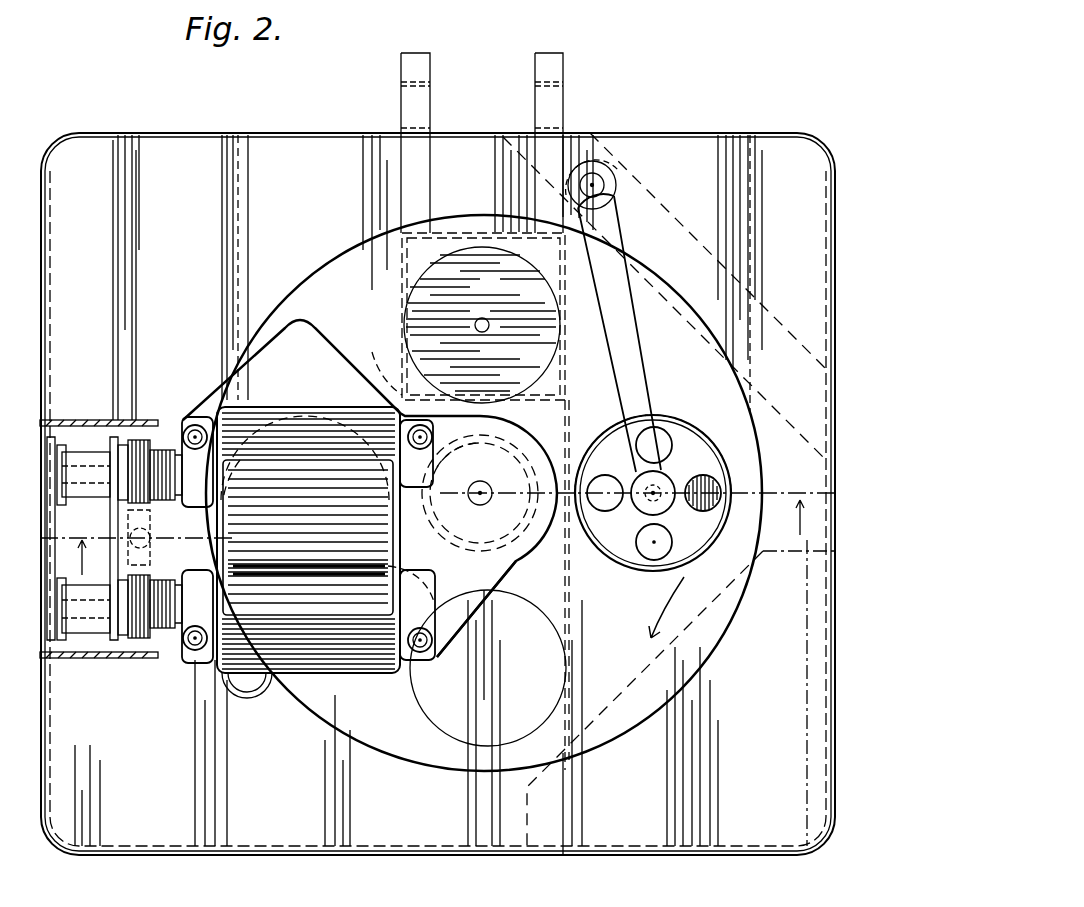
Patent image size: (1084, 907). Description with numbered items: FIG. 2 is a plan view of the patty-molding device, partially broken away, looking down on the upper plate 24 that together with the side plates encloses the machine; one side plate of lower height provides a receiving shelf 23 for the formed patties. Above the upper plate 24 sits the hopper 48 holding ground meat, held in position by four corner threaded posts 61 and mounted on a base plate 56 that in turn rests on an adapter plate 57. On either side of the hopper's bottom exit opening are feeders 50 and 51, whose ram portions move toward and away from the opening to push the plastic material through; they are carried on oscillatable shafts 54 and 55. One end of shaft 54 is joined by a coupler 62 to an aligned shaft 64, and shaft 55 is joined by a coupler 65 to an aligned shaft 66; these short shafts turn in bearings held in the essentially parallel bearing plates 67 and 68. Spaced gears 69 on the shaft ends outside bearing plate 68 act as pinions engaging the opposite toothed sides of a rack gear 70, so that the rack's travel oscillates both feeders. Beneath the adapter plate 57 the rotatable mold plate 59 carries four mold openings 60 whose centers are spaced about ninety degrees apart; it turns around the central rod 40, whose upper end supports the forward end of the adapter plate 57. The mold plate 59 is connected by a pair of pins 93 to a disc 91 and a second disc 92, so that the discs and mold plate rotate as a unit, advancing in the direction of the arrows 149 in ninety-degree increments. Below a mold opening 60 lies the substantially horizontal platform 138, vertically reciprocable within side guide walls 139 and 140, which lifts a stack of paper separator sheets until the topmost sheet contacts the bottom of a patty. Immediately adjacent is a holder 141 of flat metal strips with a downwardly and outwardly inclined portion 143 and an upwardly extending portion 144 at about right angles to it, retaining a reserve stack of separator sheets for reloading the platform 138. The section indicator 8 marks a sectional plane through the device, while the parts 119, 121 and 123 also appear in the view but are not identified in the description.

The section line indicator 8 is at (440, 537).
The receiving shelf 23 is at (757, 172).
The upper plate 24 is at (182, 155).
The rod 40 is at (483, 473).
The hopper 48 is at (360, 465).
The feeder 50 is at (350, 595).
The feeder 51 is at (275, 470).
The shaft 54 is at (440, 605).
The shaft 55 is at (437, 467).
The base plate 56 is at (525, 443).
The adapter plate 57 is at (265, 703).
The mold plate 59 is at (703, 385).
The mold openings 60 is at (560, 688).
The corner threaded posts 61 is at (198, 425).
The coupler 62 is at (168, 633).
The shaft 64 is at (87, 607).
The coupler 65 is at (170, 445).
The shaft 66 is at (95, 445).
The bearing plate 67 is at (55, 445).
The bearing plate 68 is at (115, 445).
The gears 69 is at (138, 440).
The rack gear 70 is at (145, 545).
The disc 91 is at (497, 655).
The second disc 92 is at (517, 540).
The pins 93 is at (474, 512).
The sprocket wheel 119 is at (695, 440).
The arm 121 is at (636, 348).
The pulley 123 is at (620, 178).
The platform 138 is at (463, 312).
The side guide wall 139 is at (377, 363).
The side guide wall 140 is at (402, 268).
The holder 141 is at (540, 118).
The downwardly and outwardly inclined portion 143 is at (537, 93).
The upwardly extending portion 144 is at (545, 60).
The arrows 149 is at (667, 617).